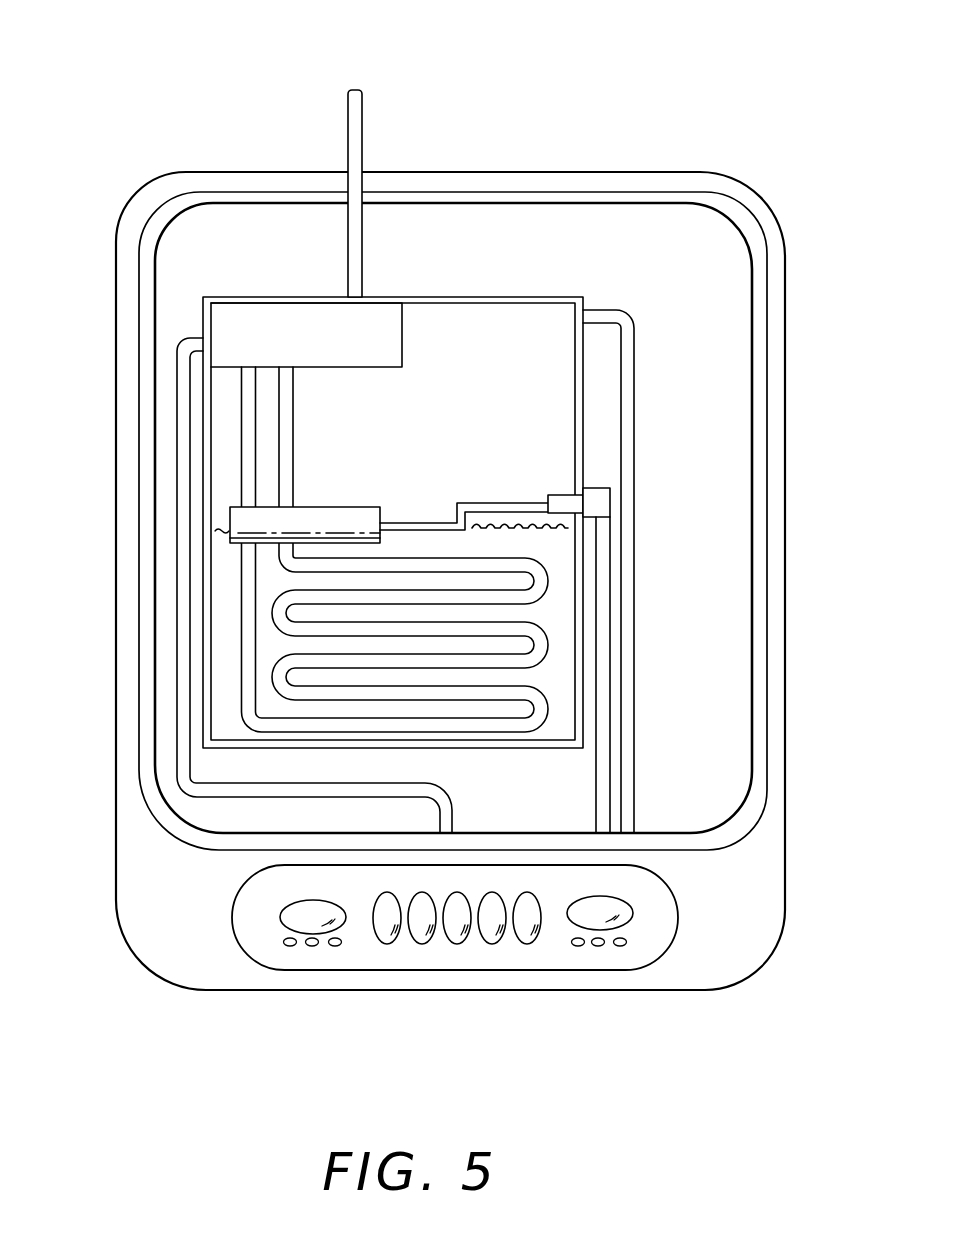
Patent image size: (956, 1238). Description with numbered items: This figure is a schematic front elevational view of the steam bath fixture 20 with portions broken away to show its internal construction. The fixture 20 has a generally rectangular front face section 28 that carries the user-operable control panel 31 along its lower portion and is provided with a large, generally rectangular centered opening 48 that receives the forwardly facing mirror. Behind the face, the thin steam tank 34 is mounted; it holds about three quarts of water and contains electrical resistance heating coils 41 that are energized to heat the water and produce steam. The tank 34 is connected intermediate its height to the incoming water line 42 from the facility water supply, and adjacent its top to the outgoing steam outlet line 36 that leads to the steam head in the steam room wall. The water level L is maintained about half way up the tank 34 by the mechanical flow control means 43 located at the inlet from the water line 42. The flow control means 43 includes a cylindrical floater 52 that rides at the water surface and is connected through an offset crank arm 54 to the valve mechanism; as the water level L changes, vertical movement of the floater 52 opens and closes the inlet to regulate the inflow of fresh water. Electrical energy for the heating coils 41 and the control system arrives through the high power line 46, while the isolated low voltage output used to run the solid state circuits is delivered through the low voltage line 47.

The fixture 20 is at (678, 171).
The front face section 28 is at (765, 845).
The control panel 31 is at (553, 937).
The steam tank 34 is at (558, 750).
The steam outlet line 36 is at (637, 583).
The heating coils 41 is at (270, 608).
The water line 42 is at (625, 661).
The flow control means 43 is at (558, 490).
The high power line 46 is at (350, 108).
The low voltage line 47 is at (183, 483).
The opening 48 is at (252, 320).
The floater 52 is at (330, 518).
The offset crank arm 54 is at (407, 523).
The water level L is at (510, 515).